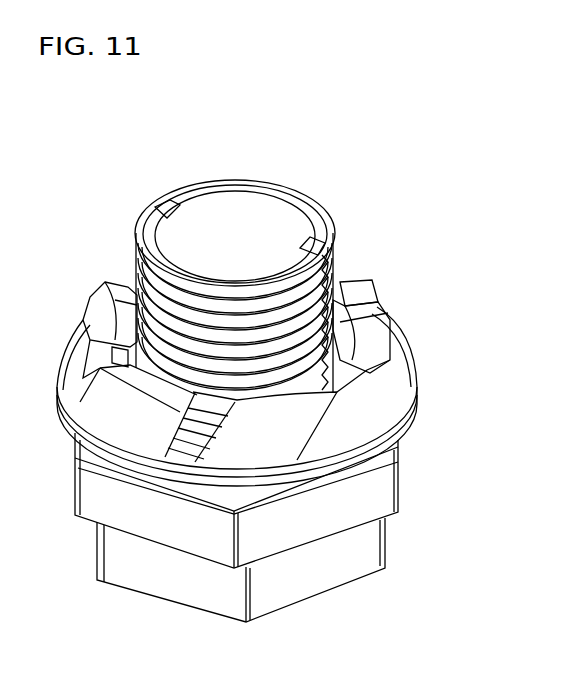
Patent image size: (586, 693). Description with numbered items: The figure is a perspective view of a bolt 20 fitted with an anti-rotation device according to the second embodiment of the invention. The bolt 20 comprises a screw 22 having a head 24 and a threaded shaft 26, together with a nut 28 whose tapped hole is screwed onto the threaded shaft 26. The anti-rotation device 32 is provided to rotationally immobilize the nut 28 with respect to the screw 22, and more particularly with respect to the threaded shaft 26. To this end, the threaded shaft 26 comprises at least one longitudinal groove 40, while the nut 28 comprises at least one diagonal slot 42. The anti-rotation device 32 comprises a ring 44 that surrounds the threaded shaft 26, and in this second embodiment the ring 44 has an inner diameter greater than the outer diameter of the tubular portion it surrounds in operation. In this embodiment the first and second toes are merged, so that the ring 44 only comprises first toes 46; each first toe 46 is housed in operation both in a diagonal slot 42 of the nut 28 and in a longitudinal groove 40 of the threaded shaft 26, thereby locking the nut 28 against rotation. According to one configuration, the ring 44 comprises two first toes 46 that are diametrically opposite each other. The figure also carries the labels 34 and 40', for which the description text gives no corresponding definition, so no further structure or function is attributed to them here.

The bolt 20 is at (392, 197).
The screw 22 is at (128, 262).
The head 24 is at (315, 553).
The threaded shaft 26 is at (237, 220).
The nut 28 is at (427, 482).
The anti-rotation device 32 is at (413, 427).
The right locking segment 34 is at (340, 316).
The longitudinal groove 40 is at (318, 198).
The tab 40' is at (160, 171).
The diagonal slot 42 is at (395, 280).
The ring 44 is at (428, 355).
The first toe 46 is at (108, 299).